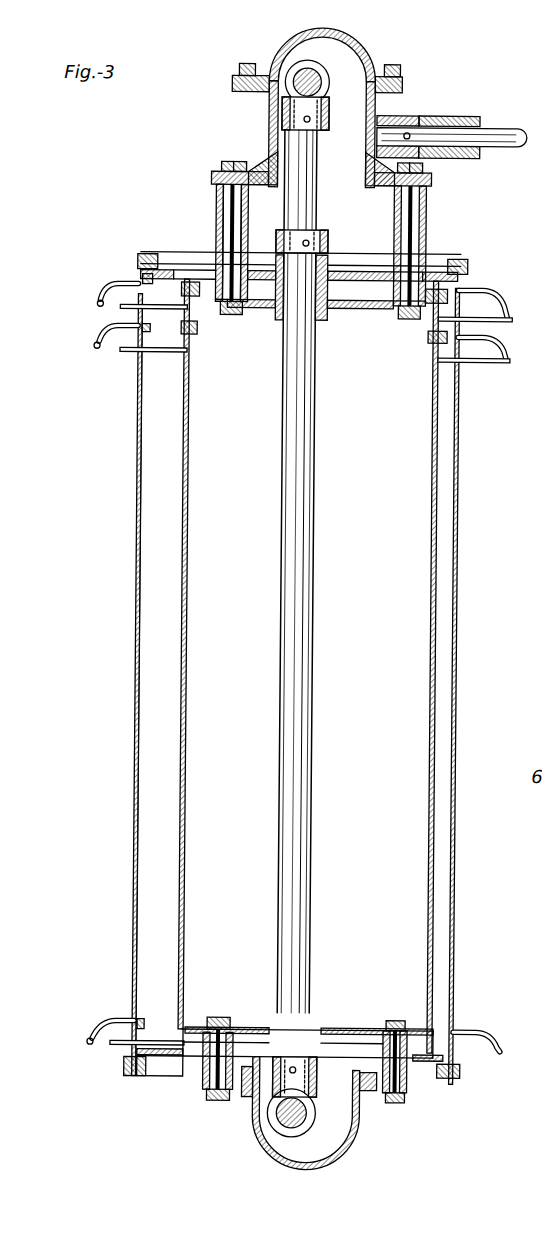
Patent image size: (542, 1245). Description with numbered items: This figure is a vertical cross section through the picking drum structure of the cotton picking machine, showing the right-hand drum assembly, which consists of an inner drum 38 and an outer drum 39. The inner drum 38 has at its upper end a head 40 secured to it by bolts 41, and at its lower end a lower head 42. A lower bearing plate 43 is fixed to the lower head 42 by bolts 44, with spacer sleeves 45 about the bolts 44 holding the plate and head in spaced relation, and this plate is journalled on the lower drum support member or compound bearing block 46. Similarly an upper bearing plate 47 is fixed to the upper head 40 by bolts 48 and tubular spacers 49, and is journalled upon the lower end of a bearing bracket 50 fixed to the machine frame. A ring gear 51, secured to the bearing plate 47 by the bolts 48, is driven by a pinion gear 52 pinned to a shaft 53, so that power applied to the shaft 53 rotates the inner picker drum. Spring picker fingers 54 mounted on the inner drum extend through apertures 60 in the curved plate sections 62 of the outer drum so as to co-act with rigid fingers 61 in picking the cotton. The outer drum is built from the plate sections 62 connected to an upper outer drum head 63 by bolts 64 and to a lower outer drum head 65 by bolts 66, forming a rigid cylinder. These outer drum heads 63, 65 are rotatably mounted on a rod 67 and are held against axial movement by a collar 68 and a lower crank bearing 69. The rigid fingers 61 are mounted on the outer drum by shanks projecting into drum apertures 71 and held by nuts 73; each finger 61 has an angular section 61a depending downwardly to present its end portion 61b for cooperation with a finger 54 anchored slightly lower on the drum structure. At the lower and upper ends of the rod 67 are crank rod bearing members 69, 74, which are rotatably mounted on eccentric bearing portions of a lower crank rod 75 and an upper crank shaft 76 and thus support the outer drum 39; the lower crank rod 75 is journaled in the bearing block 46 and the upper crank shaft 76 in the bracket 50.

The inner drum 38 is at (190, 572).
The outer drum 39 is at (134, 474).
The head 40 is at (262, 310).
The bolts 41 is at (227, 316).
The lower head 42 is at (330, 1030).
The lower bearing plate 43 is at (247, 1096).
The bolts 44 is at (214, 1096).
The spacer sleeves 45 is at (203, 1072).
The compound bearing block 46 is at (270, 1151).
The upper bearing plate 47 is at (210, 178).
The bolts 48 is at (223, 160).
The tubular spacers 49 is at (216, 216).
The bearing bracket 50 is at (268, 127).
The ring gear 51 is at (256, 161).
The pinion gear 52 is at (396, 112).
The shaft 53 is at (498, 127).
The spring picker fingers 54 is at (494, 362).
The apertures 60 is at (134, 353).
The rigid fingers 61 is at (492, 291).
The angular section 61a is at (112, 283).
The end portion 61b is at (98, 303).
The curved plate sections 62 is at (136, 527).
The upper outer drum head 63 is at (198, 257).
The bolts 64 is at (139, 258).
The lower outer drum head 65 is at (168, 1078).
The bolts 66 is at (130, 1070).
The rod 67 is at (317, 358).
The collar 68 is at (328, 243).
The lower crank bearing 69 is at (319, 1082).
The drum apertures 71 is at (135, 309).
The nuts 73 is at (152, 323).
The crank rod bearing member 74 is at (327, 111).
The lower crank rod 75 is at (311, 1123).
The upper crank shaft 76 is at (320, 78).